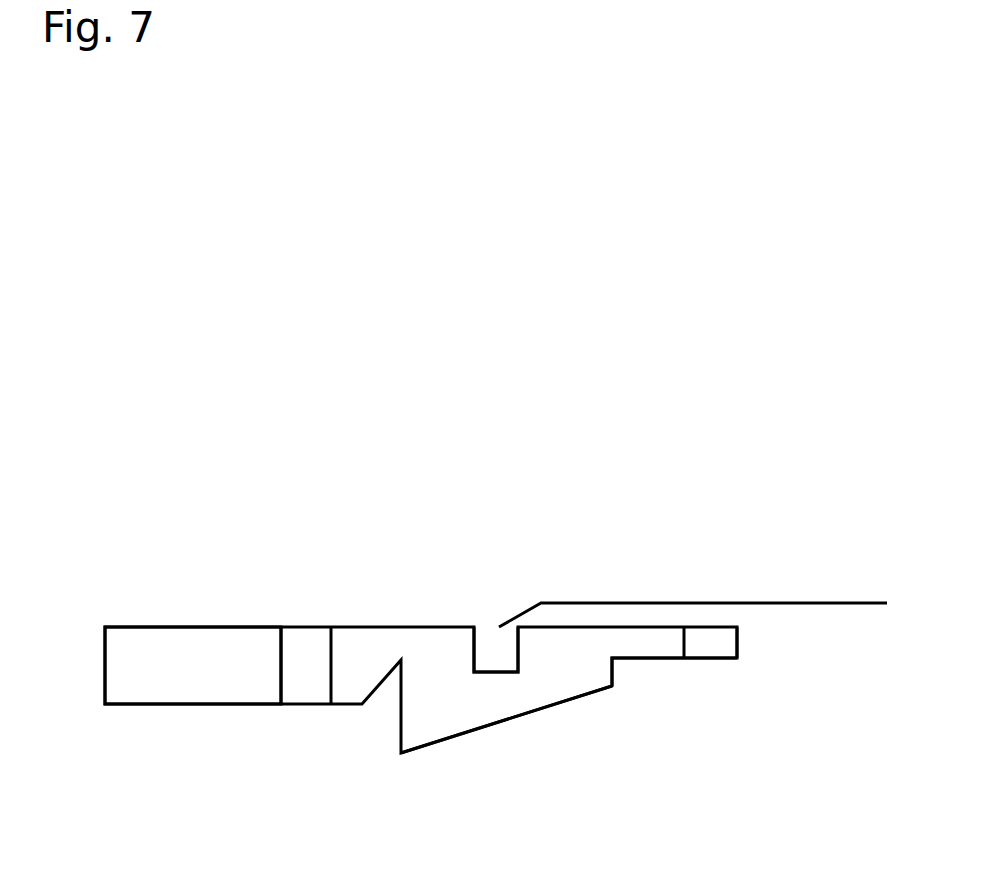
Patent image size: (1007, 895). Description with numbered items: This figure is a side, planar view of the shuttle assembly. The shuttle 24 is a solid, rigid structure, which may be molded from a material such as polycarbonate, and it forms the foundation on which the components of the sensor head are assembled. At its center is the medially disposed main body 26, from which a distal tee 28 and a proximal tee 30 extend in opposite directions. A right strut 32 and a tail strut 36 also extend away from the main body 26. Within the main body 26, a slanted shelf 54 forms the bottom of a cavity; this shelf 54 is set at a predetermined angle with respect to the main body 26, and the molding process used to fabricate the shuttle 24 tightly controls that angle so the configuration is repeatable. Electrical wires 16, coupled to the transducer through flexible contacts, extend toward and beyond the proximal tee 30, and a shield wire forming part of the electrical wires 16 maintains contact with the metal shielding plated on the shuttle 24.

The electrical wires 16 is at (812, 603).
The shuttle 24 is at (421, 739).
The main body 26 is at (560, 656).
The distal tee 28 is at (300, 690).
The proximal tee 30 is at (715, 648).
The right strut 32 is at (500, 650).
The tail strut 36 is at (162, 647).
The slanted shelf 54 is at (453, 739).